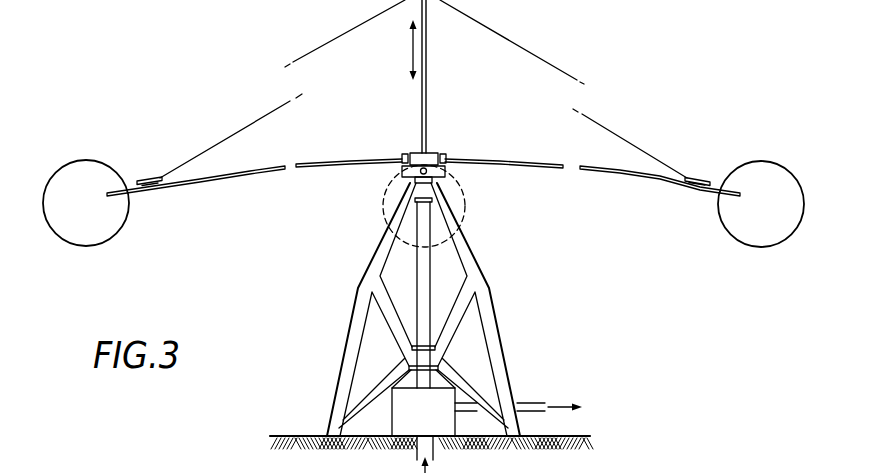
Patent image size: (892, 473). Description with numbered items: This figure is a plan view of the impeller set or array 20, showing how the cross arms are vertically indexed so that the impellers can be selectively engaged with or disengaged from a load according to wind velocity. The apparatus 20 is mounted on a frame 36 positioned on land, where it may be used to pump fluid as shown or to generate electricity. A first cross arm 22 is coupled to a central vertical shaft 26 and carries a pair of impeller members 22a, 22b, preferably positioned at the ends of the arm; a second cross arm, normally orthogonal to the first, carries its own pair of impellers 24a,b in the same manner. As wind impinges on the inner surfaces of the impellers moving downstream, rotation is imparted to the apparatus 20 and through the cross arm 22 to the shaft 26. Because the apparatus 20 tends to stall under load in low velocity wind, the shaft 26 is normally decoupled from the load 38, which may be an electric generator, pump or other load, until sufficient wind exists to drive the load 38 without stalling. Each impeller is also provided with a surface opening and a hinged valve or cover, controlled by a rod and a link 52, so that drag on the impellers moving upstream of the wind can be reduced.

The impeller set or array 20 is at (644, 110).
The first cross arm 22 is at (515, 167).
The impeller member 22a is at (93, 228).
The impeller member 22b is at (745, 223).
The impeller members 24a,b is at (382, 193).
The central vertical shaft 26 is at (423, 263).
The frame 36 is at (495, 348).
The load 38 is at (413, 415).
The link 52 is at (740, 472).